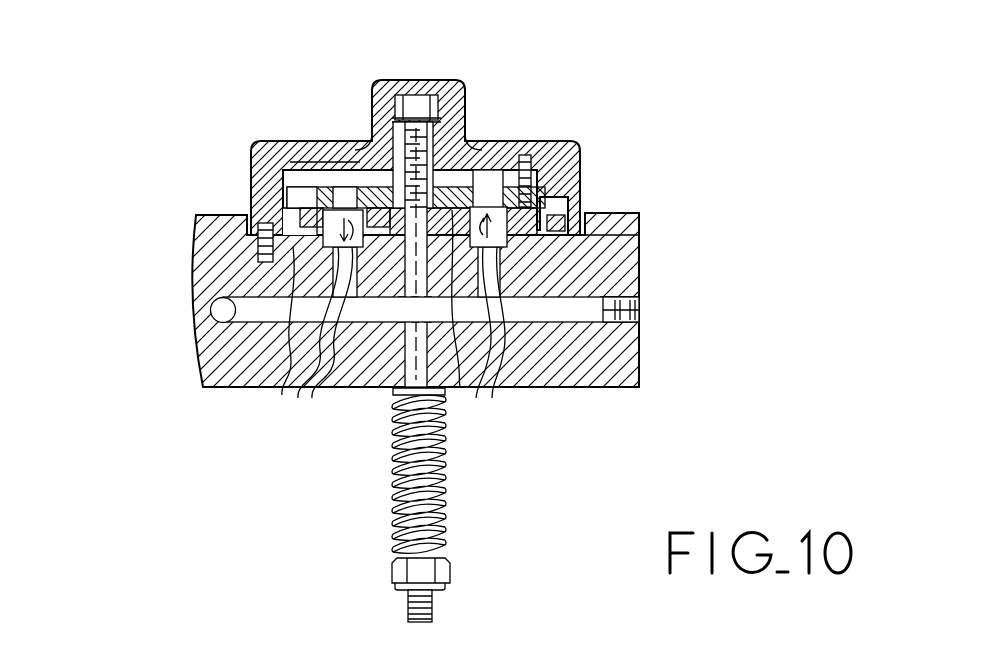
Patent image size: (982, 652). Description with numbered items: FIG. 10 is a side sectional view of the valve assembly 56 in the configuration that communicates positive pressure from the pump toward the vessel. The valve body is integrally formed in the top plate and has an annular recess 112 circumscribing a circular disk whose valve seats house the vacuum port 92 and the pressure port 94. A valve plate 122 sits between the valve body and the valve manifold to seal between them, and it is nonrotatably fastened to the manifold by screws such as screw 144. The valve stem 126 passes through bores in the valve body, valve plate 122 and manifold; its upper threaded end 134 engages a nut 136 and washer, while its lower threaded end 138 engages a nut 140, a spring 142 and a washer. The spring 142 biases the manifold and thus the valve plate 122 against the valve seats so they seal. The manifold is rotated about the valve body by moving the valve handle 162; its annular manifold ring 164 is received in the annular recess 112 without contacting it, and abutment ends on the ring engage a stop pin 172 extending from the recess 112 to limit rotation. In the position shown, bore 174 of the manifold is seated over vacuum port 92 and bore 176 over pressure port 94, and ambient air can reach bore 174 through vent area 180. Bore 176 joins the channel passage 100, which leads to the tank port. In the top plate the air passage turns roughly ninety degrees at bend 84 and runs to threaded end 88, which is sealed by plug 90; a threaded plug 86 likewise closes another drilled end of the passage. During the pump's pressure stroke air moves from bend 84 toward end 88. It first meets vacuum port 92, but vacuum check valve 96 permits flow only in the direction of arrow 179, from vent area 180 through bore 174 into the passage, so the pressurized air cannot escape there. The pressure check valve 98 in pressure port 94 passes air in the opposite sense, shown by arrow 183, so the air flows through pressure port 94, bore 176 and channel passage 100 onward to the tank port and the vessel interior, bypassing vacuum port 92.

The valve assembly 56 is at (150, 90).
The nut 136 is at (412, 95).
The threaded end 134 is at (372, 98).
The valve plate 122 is at (358, 141).
The vent area 180 is at (343, 190).
The bore 174 is at (313, 150).
The valve handle 162 is at (270, 139).
The channel passage 100 is at (478, 185).
The bore 176 is at (488, 200).
The screw 144 is at (536, 167).
The annular recess 112 is at (580, 195).
The stop pin 172 is at (257, 243).
The annular manifold ring 164 is at (555, 240).
The pressure port 94 is at (512, 238).
The bend 84 is at (212, 308).
The threaded plug 86 is at (212, 308).
The threaded end 88 is at (640, 308).
The plug 90 is at (637, 312).
The vacuum check valve 96 is at (226, 318).
The vacuum port 92 is at (204, 386).
The arrow 179 is at (290, 386).
The valve stem 126 is at (393, 387).
The arrow 183 is at (490, 382).
The pressure check valve 98 is at (476, 390).
The spring 142 is at (445, 474).
The nut 140 is at (392, 570).
The threaded end 138 is at (436, 605).